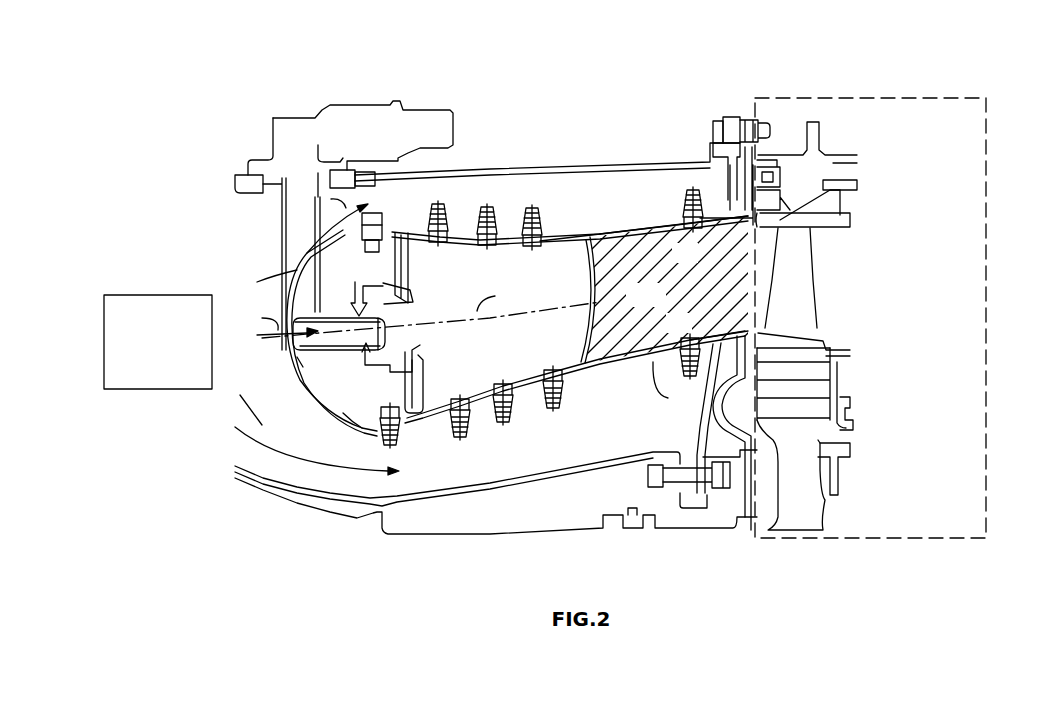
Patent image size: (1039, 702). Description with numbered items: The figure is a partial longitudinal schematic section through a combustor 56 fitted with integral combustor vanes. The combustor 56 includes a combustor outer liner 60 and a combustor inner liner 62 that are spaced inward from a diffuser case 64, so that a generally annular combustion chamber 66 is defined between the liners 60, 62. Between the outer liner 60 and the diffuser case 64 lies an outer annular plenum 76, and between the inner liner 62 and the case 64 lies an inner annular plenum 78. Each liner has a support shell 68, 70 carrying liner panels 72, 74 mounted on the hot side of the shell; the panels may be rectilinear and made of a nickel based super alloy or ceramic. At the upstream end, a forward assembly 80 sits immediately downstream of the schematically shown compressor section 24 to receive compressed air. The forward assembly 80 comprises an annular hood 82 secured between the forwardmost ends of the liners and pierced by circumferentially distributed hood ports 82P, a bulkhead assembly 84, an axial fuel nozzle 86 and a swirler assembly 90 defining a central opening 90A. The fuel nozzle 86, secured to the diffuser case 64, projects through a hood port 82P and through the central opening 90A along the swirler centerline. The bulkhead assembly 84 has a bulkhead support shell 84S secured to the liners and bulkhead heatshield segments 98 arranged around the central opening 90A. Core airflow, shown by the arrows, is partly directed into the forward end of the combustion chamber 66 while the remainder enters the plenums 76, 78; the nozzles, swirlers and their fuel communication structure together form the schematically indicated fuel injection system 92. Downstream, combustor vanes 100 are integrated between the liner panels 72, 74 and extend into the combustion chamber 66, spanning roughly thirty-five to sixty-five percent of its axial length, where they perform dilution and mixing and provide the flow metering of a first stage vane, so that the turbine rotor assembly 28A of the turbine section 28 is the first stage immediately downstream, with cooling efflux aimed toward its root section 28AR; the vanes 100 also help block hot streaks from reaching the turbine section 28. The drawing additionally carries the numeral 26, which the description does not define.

The compressor section 24 is at (147, 355).
The combustor section flange 26 is at (698, 121).
The turbine section 28 is at (870, 318).
The turbine rotor assembly 28A is at (823, 267).
The root section 28AR is at (800, 325).
The combustor 56 is at (639, 90).
The combustor outer liner 60 is at (612, 205).
The combustor inner liner 62 is at (603, 381).
The diffuser case 64 is at (552, 168).
The combustion chamber 66 is at (519, 346).
The support shell 68 is at (638, 222).
The support shell 70 is at (657, 378).
The liner panels 72 is at (648, 238).
The liner panels 74 is at (688, 339).
The outer annular plenum 76 is at (559, 209).
The inner annular plenum 78 is at (592, 441).
The forward assembly 80 is at (338, 422).
The annular hood 82 is at (318, 391).
The hood ports 82P is at (302, 372).
The bulkhead assembly 84 is at (413, 268).
The bulkhead support shell 84S is at (397, 386).
The axial fuel nozzle 86 is at (307, 250).
The swirler assembly 90 is at (413, 345).
The central opening 90A is at (407, 312).
The fuel injection system 92 is at (307, 104).
The bulkhead heatshield segments 98 is at (417, 397).
The combustor vanes 100 is at (628, 303).